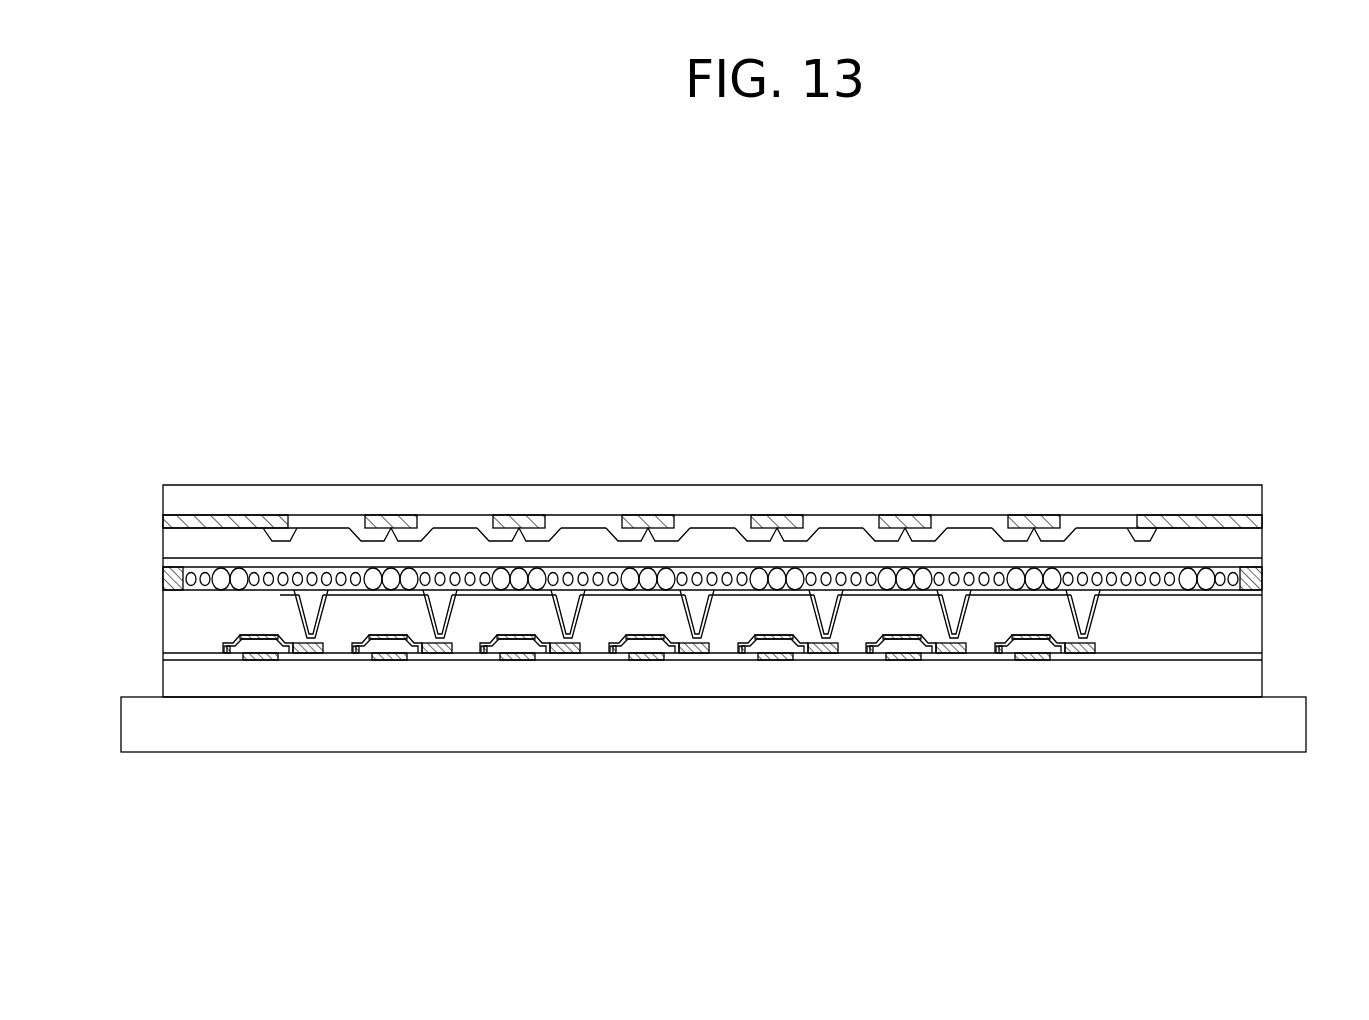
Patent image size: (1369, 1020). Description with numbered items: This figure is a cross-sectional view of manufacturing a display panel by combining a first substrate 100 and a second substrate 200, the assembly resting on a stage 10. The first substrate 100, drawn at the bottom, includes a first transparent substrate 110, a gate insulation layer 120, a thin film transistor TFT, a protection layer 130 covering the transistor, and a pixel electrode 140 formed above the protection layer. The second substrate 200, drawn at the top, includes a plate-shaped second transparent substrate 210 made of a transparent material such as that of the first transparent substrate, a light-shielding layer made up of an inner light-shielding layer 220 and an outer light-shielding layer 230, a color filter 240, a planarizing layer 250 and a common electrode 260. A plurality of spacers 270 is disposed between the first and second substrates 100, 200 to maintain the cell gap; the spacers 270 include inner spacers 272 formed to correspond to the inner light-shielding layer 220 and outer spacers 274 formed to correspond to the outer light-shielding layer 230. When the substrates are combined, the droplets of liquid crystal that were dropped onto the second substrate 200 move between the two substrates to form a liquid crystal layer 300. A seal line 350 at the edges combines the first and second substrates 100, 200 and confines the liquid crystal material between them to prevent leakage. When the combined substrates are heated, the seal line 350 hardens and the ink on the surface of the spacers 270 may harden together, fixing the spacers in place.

The stage 10 is at (1290, 725).
The first substrate 100 is at (152, 668).
The first transparent substrate 110 is at (690, 678).
The gate insulation layer 120 is at (752, 662).
The protection layer 130 is at (852, 640).
The pixel electrode 140 is at (985, 597).
The thin film transistor TFT is at (642, 670).
The second substrate 200 is at (152, 500).
The second transparent substrate 210 is at (1238, 500).
The inner light-shielding layer 220 is at (1029, 525).
The outer light-shielding layer 230 is at (1174, 524).
The color filter 240 is at (1098, 524).
The planarizing layer 250 is at (968, 545).
The common electrode 260 is at (842, 570).
The spacers 270 is at (712, 489).
The inner spacers 272 is at (372, 575).
The outer spacers 274 is at (402, 433).
The liquid crystal layer 300 is at (256, 593).
The seal line 350 is at (163, 575).